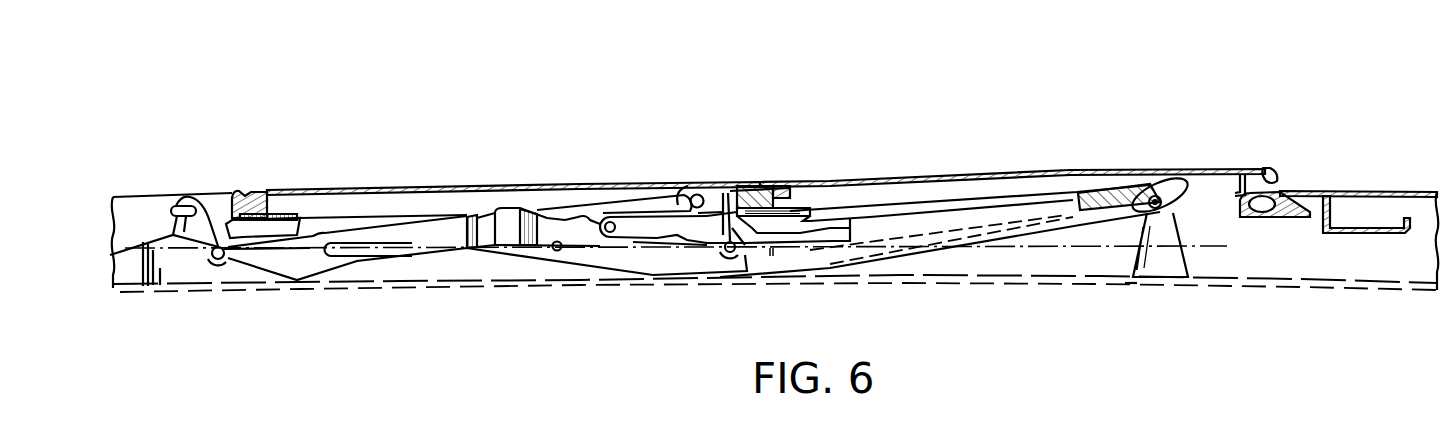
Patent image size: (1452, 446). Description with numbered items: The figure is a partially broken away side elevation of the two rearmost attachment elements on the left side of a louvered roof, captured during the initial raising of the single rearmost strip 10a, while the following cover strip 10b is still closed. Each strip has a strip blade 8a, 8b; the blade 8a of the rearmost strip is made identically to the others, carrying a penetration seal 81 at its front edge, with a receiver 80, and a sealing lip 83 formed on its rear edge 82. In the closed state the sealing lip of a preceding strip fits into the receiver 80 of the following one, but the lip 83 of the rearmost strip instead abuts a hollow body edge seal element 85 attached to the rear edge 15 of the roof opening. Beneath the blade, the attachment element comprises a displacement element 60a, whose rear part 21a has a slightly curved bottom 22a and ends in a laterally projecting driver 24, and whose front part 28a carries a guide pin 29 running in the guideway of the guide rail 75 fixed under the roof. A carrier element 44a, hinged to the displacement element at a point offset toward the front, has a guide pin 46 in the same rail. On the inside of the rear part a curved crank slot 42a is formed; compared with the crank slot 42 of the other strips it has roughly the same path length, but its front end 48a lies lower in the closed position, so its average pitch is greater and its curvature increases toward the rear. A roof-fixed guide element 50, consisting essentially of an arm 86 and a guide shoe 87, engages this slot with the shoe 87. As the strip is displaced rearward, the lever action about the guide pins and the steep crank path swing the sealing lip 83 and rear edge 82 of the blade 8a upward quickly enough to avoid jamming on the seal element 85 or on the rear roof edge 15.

The strip blade 8a is at (970, 177).
The strip blade 8b is at (367, 190).
The rearmost strip 10a is at (1043, 170).
The cover strip 10b is at (497, 190).
The rear edge of the roof opening 15 is at (1282, 174).
The rear part 21a is at (933, 223).
The bottom 22a is at (1042, 245).
The driver 24 is at (470, 205).
The front part 28a is at (553, 210).
The guide pin 29 is at (557, 252).
The crank slot 42 is at (410, 250).
The crank slot 42a is at (973, 245).
The carrier element 44a is at (803, 205).
The guide pin 46 is at (732, 262).
The front end of the crank slot 48a is at (826, 256).
The guide element 50 is at (1133, 283).
The displacement element 60a is at (680, 275).
The guide rail 75 is at (470, 285).
The receiver 80 is at (766, 190).
The penetration seal 81 is at (728, 193).
The rear edge 82 is at (1247, 167).
The sealing lip 83 is at (1270, 167).
The hollow body edge seal element 85 is at (1295, 187).
The arm 86 is at (1170, 238).
The guide shoe 87 is at (1153, 196).